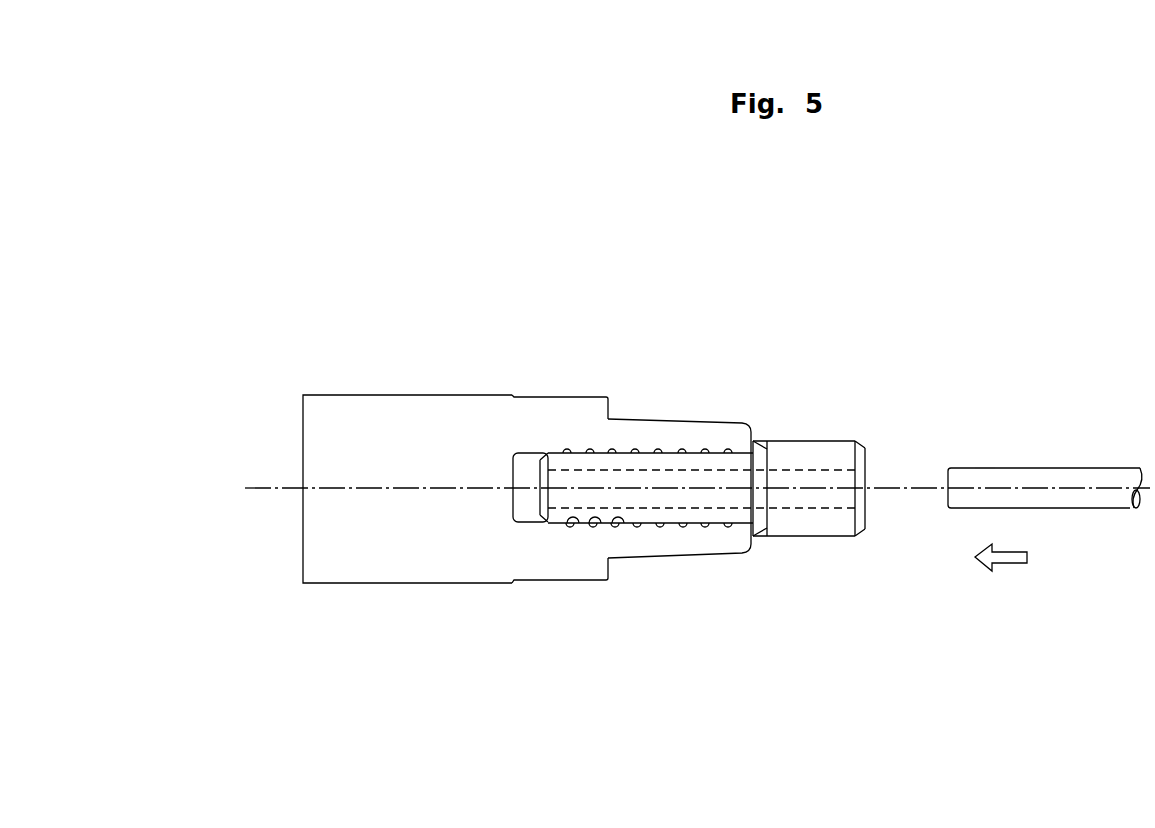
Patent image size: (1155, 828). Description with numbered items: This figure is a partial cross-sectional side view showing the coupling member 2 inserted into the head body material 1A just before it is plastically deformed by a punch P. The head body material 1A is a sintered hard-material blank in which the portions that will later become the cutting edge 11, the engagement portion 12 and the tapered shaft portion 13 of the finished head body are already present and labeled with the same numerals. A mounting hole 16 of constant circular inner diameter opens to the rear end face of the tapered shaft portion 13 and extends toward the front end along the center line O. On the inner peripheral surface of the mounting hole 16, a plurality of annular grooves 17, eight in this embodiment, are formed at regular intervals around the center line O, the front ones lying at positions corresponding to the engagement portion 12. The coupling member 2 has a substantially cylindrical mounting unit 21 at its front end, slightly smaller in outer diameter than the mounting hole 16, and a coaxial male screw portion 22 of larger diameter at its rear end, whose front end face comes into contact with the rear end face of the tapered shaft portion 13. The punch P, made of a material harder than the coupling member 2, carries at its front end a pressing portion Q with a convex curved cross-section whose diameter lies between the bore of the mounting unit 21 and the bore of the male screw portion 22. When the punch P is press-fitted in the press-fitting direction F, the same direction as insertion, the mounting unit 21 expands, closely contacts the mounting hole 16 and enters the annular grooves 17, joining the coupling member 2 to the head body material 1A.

The head body material 1A is at (575, 365).
The cutting edge 11 is at (413, 378).
The engagement portion 12 is at (540, 378).
The tapered shaft portion 13 is at (655, 398).
The mounting hole 16 is at (528, 468).
The annular grooves 17 is at (573, 525).
The coupling member 2 is at (798, 418).
The mounting unit 21 is at (700, 440).
The male screw portion 22 is at (820, 435).
The center line O is at (272, 490).
The punch P is at (1068, 450).
The pressing portion Q is at (985, 468).
The press-fitting direction F is at (1001, 572).